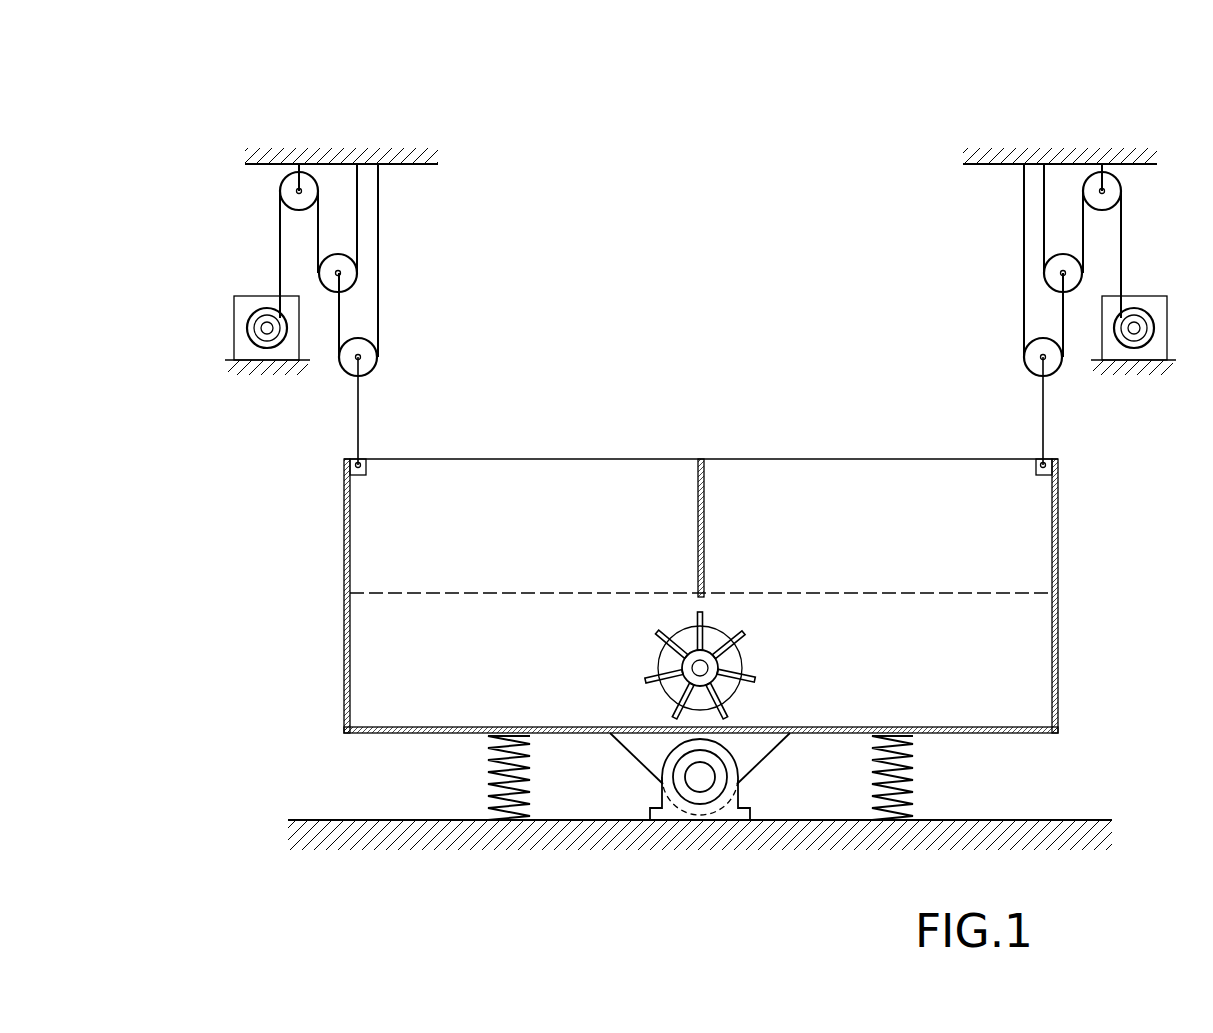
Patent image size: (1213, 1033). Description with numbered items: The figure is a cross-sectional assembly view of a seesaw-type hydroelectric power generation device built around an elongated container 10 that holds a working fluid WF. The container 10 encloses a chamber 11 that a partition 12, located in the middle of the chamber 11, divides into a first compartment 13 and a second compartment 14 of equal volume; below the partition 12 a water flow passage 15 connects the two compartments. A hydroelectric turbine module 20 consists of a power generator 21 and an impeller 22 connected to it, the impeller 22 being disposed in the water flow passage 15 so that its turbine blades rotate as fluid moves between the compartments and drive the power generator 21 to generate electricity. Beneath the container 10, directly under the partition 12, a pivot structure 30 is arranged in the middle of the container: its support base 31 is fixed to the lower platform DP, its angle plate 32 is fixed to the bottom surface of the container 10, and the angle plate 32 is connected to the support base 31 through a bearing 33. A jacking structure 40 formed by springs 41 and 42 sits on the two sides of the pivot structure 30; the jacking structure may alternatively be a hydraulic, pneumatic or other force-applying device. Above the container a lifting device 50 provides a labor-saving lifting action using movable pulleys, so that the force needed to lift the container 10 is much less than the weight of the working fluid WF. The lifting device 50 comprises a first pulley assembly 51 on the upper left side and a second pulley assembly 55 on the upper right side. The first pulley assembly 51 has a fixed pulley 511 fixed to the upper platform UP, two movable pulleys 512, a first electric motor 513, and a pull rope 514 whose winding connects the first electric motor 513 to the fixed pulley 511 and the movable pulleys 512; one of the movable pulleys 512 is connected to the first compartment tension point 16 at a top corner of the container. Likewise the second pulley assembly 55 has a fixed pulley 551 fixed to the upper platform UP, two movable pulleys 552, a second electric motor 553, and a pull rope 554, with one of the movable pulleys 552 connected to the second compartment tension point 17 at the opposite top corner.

The elongated container 10 is at (645, 410).
The chamber 11 is at (1038, 555).
The partition 12 is at (704, 485).
The first compartment 13 is at (545, 482).
The second compartment 14 is at (859, 482).
The water flow passage 15 is at (687, 594).
The first compartment tension point 16 is at (350, 464).
The second compartment tension point 17 is at (1058, 464).
The hydroelectric turbine module 20 is at (1110, 633).
The power generator 21 is at (735, 659).
The impeller 22 is at (728, 709).
The pivot structure 30 is at (778, 884).
The support base 31 is at (670, 806).
The angle plate 32 is at (748, 760).
The bearing 33 is at (702, 782).
The jacking structure 40 is at (386, 786).
The spring 41 is at (487, 775).
The spring 42 is at (913, 778).
The lifting device 50 is at (254, 66).
The first pulley assembly 51 is at (335, 130).
The fixed pulley 511 is at (288, 183).
The movable pulleys 512 is at (348, 273).
The first electric motor 513 is at (260, 302).
The pull rope 514 is at (378, 213).
The second pulley assembly 55 is at (1067, 130).
The fixed pulley 551 is at (1112, 185).
The movable pulleys 552 is at (1053, 273).
The second electric motor 553 is at (1141, 302).
The pull rope 554 is at (1024, 213).
The upper platform UP is at (408, 163).
The working fluid WF is at (1020, 598).
The lower platform DP is at (1057, 822).